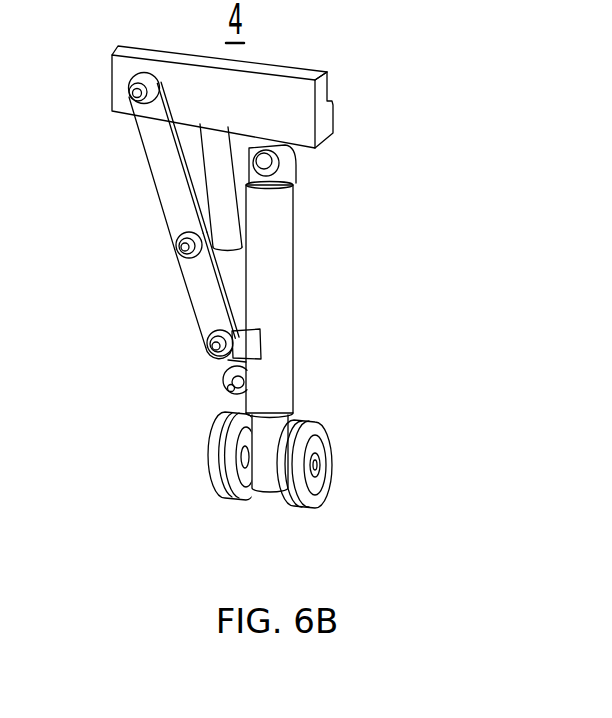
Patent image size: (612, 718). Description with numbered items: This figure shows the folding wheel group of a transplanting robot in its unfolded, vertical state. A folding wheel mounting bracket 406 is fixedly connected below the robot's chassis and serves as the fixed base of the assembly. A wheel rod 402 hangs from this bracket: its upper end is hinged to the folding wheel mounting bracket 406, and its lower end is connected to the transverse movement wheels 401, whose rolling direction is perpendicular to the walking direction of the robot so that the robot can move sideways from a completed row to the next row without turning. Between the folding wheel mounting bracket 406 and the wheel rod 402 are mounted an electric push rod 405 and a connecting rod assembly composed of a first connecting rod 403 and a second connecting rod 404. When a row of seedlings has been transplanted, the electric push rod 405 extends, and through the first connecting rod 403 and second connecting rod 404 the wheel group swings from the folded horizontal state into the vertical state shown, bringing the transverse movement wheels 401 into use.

The transverse movement wheels 401 is at (290, 490).
The wheel rod 402 is at (275, 393).
The first connecting rod 403 is at (212, 311).
The second connecting rod 404 is at (185, 210).
The electric push rod 405 is at (218, 195).
The folding wheel mounting bracket 406 is at (296, 144).